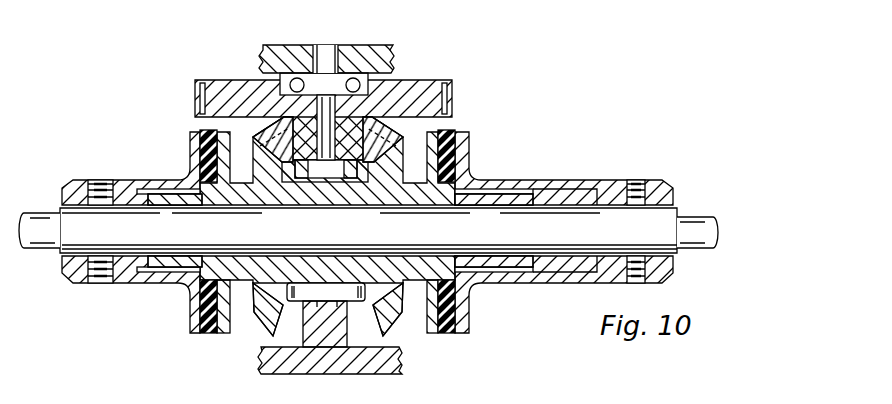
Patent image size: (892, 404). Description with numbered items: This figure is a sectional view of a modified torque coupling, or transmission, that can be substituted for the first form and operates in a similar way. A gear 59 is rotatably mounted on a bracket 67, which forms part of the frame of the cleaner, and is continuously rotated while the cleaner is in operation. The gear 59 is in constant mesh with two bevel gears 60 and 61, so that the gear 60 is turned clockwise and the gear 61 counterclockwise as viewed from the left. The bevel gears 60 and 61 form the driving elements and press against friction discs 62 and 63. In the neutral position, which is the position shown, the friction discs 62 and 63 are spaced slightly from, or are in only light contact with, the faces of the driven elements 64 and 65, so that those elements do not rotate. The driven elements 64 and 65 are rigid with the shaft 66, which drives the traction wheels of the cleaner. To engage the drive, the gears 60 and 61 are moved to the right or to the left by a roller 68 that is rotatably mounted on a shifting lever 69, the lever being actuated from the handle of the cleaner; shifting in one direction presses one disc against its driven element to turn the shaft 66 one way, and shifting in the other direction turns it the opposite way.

The gear 59 is at (243, 80).
The bevel gear 60 is at (248, 318).
The bevel gear 61 is at (412, 141).
The friction disc 62 is at (210, 336).
The friction disc 63 is at (447, 336).
The driven element 64 is at (136, 284).
The driven element 65 is at (546, 284).
The shaft 66 is at (410, 240).
The bracket 67 is at (381, 45).
The roller 68 is at (326, 293).
The shifting lever 69 is at (310, 375).